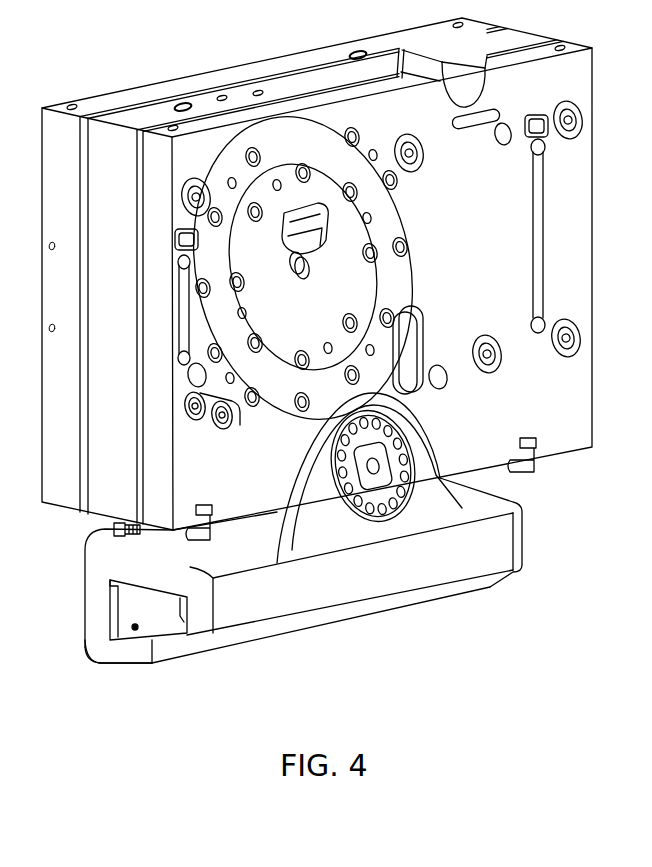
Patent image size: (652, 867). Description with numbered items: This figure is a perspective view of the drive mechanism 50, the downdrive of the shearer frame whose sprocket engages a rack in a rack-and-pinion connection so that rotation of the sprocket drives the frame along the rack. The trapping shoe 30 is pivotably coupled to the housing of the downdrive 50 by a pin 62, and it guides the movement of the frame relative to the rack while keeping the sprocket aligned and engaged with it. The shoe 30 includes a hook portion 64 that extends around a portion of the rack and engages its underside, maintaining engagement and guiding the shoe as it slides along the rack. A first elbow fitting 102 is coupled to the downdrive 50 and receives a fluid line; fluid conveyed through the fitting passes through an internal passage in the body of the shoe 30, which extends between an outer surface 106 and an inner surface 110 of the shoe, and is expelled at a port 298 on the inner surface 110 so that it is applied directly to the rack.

The trapping shoe 30 is at (278, 556).
The drive mechanism 50 is at (578, 195).
The pin 62 is at (397, 493).
The hook portion 64 is at (133, 653).
The first elbow fitting 102 is at (113, 528).
The outer surface 106 is at (83, 647).
The inner surface 110 is at (120, 603).
The port 298 is at (138, 630).